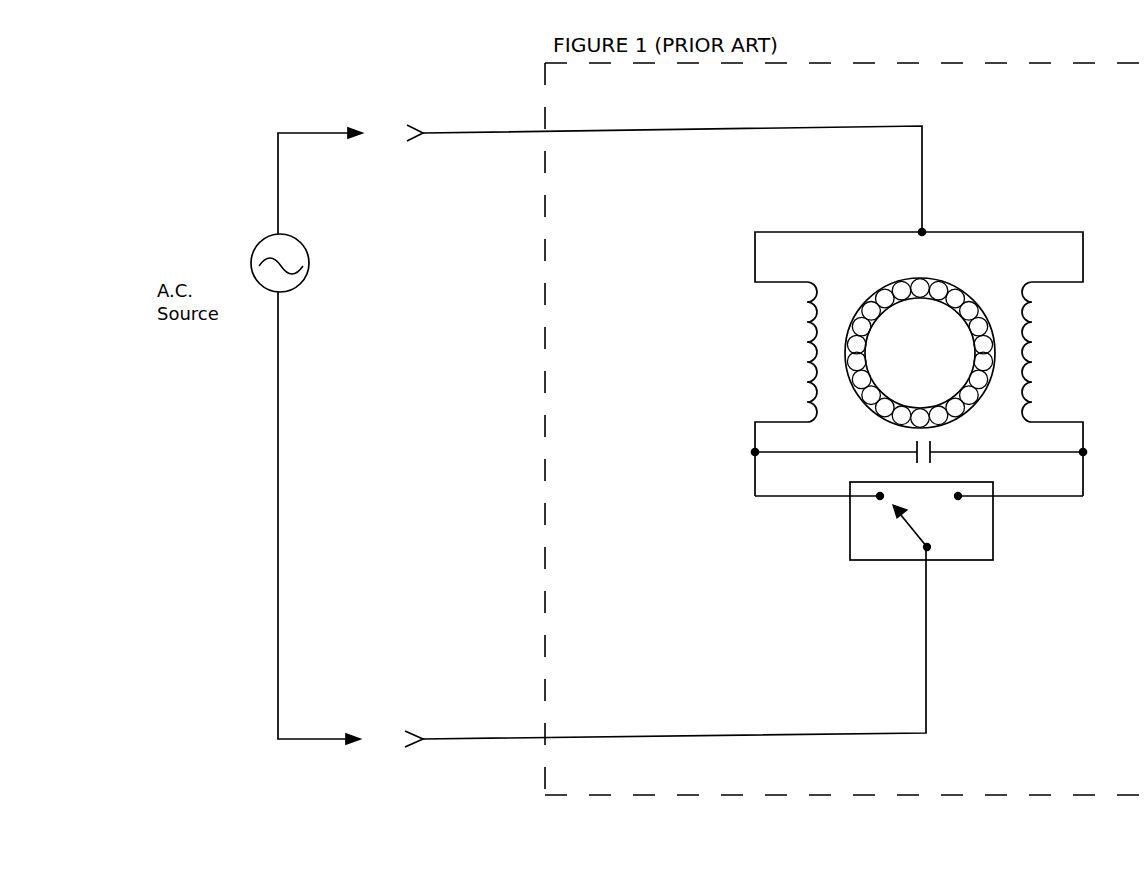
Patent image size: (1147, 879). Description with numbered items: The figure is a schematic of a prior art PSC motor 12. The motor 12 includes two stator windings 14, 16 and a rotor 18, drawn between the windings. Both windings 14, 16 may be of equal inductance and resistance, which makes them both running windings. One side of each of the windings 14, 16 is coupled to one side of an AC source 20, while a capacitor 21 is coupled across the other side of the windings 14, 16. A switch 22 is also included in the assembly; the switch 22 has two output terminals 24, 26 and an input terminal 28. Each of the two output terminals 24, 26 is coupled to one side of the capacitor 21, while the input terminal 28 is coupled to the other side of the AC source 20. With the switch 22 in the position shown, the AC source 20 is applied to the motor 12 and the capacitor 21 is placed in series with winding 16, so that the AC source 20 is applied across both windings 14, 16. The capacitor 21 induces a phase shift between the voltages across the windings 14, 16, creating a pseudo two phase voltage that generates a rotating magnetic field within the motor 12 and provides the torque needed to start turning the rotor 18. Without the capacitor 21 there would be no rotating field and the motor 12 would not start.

The PSC motor 12 is at (919, 338).
The stator winding 14 is at (768, 352).
The stator winding 16 is at (1072, 352).
The rotor 18 is at (949, 328).
The AC source 20 is at (236, 263).
The capacitor 21 is at (919, 439).
The switch 22 is at (940, 548).
The output terminal 24 is at (819, 480).
The output terminal 26 is at (1019, 484).
The input terminal 28 is at (904, 560).